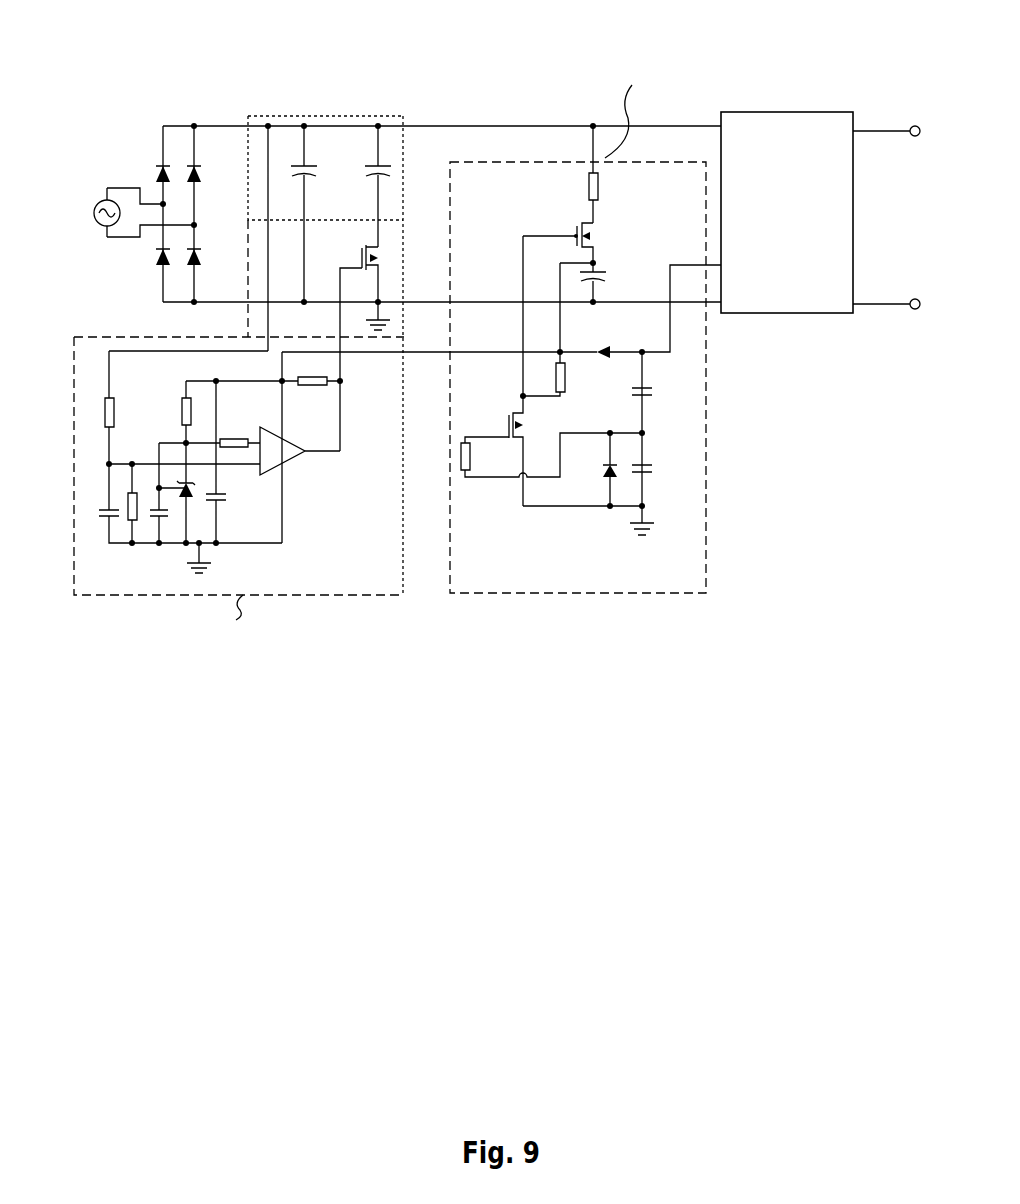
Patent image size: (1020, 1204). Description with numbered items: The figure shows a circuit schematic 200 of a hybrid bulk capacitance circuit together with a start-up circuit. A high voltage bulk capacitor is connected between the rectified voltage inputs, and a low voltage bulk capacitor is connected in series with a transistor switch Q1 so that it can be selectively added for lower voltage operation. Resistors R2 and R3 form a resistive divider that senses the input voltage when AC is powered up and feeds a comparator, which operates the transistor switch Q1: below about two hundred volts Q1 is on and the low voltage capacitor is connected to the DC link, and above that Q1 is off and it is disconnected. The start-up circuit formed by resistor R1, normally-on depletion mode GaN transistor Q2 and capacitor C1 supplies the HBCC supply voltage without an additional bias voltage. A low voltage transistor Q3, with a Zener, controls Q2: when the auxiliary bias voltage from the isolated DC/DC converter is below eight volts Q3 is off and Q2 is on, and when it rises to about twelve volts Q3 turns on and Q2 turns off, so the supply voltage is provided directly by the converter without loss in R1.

The power supply circuit with hybrid bulk capacitance circuit and startup circuit 200 is at (87, 59).
The startup resistor R1 is at (605, 174).
The depletion mode transistor switch Q2 is at (586, 237).
The startup capacitor C1 is at (604, 282).
The transistor switch Q1 is at (361, 347).
The low voltage transistor Q3 is at (494, 371).
The divider resistor R2 is at (186, 407).
The divider resistor R3 is at (141, 503).